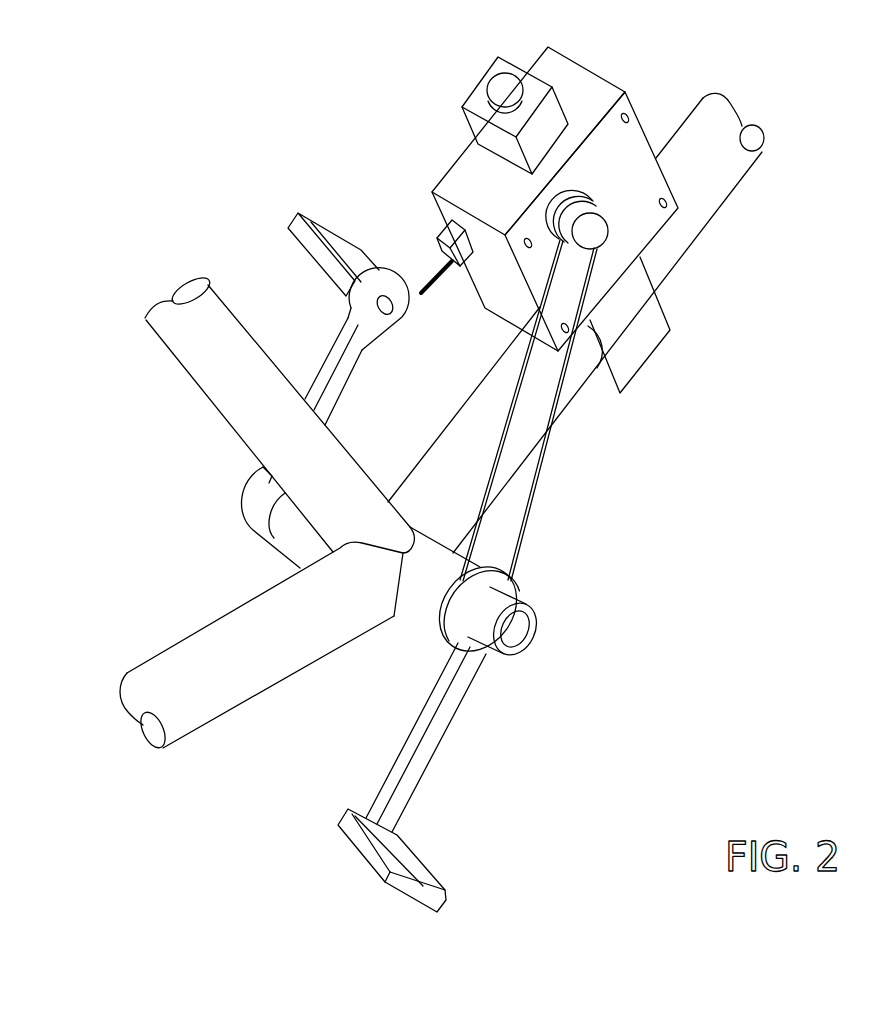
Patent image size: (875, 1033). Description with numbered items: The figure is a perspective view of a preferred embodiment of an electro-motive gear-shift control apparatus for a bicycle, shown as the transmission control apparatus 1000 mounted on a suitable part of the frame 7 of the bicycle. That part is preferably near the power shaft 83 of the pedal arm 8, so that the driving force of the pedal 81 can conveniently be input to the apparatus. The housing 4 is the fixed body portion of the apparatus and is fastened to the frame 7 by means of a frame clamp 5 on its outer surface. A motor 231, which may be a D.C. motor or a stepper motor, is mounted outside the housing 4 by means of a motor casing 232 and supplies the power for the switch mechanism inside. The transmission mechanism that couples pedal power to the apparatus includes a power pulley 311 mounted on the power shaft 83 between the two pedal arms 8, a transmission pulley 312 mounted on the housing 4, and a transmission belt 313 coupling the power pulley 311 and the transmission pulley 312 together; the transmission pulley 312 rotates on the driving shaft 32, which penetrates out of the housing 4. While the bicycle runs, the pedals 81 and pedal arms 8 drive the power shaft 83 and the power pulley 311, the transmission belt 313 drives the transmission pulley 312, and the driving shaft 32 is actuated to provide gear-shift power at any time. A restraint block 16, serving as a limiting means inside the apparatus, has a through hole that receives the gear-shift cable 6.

The transmission control apparatus 1000 is at (708, 443).
The housing 4 is at (571, 62).
The motor 231 is at (496, 87).
The motor casing 232 is at (476, 121).
The transmission pulley 312 is at (586, 198).
The driving shaft 32 is at (600, 234).
The transmission belt 313 is at (537, 490).
The power pulley 311 is at (432, 623).
The frame clamp 5 is at (646, 337).
The cable 6 is at (430, 279).
The restraint block 16 is at (457, 268).
The frame 7 is at (723, 187).
The pedal arm 8 is at (337, 350).
The pedal 81 is at (316, 234).
The power shaft 83 is at (508, 628).